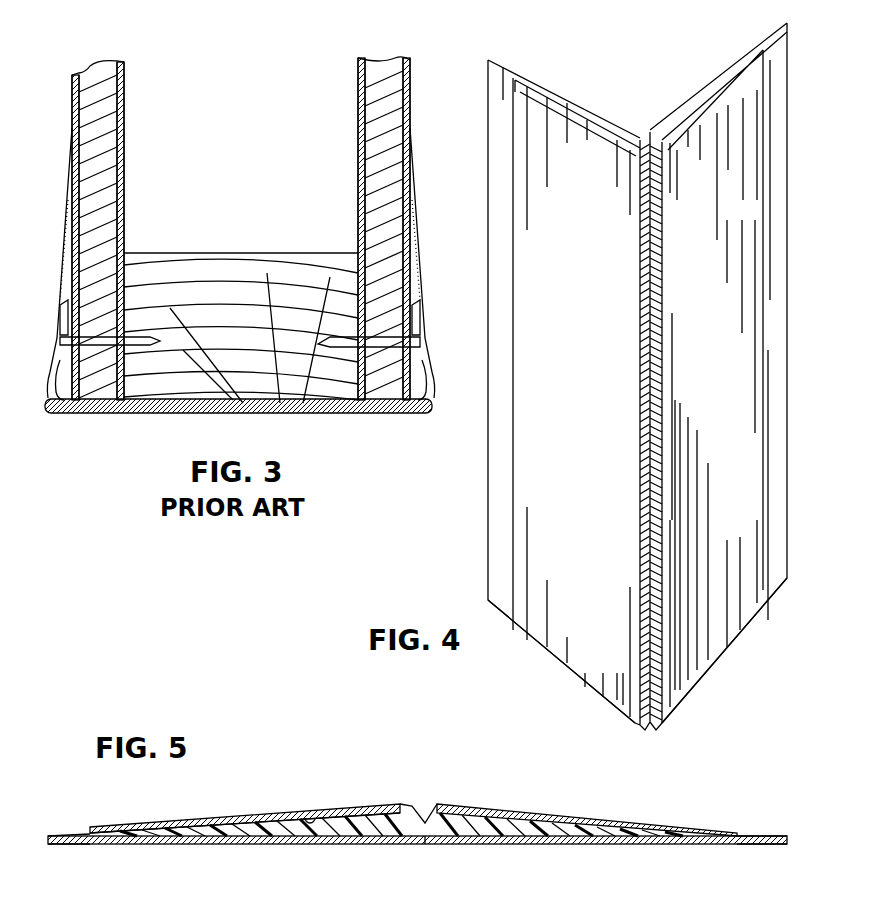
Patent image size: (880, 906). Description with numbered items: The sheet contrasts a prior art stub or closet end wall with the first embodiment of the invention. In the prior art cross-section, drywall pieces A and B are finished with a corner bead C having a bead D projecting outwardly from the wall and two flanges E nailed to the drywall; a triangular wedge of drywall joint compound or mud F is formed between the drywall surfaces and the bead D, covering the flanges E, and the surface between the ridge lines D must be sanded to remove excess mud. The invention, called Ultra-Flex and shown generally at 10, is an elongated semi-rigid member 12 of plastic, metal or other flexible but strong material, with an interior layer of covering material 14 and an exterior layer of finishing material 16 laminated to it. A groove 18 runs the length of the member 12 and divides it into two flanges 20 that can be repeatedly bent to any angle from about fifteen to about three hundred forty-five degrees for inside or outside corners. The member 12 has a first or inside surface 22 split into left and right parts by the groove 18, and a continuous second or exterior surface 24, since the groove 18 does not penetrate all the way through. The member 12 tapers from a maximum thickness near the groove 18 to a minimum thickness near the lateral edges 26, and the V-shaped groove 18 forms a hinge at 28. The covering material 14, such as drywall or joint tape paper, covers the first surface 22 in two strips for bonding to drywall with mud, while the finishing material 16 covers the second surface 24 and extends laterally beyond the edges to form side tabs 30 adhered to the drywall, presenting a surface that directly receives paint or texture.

In FIG. 3, the drywall piece A is at (88, 90).
In FIG. 3, the drywall piece B is at (392, 88).
In FIG. 3, the corner bead C is at (182, 408).
In FIG. 3, the bead D is at (44, 378).
In FIG. 3, the flange E is at (60, 310).
In FIG. 3, the drywall joint compound wedge F is at (64, 236).
In FIG. 4, the Ultra-Flex corner trim piece 10 is at (608, 391).
In FIG. 4, the elongated semi-rigid member 12 is at (686, 110).
In FIG. 5, the elongated semi-rigid member 12 is at (496, 844).
In FIG. 4, the covering material 14 is at (584, 346).
In FIG. 5, the covering material 14 is at (220, 816).
In FIG. 4, the finishing material 16 is at (576, 110).
In FIG. 5, the finishing material 16 is at (284, 840).
In FIG. 4, the groove 18 is at (652, 728).
In FIG. 5, the groove 18 is at (422, 812).
In FIG. 4, the flange 20 is at (558, 652).
In FIG. 5, the first surface 22 is at (312, 816).
In FIG. 5, the second surface 24 is at (372, 834).
In FIG. 5, the lateral edge 26 is at (86, 844).
In FIG. 5, the hinge 28 is at (427, 846).
In FIG. 4, the side tab 30 is at (488, 578).
In FIG. 5, the side tab 30 is at (70, 830).